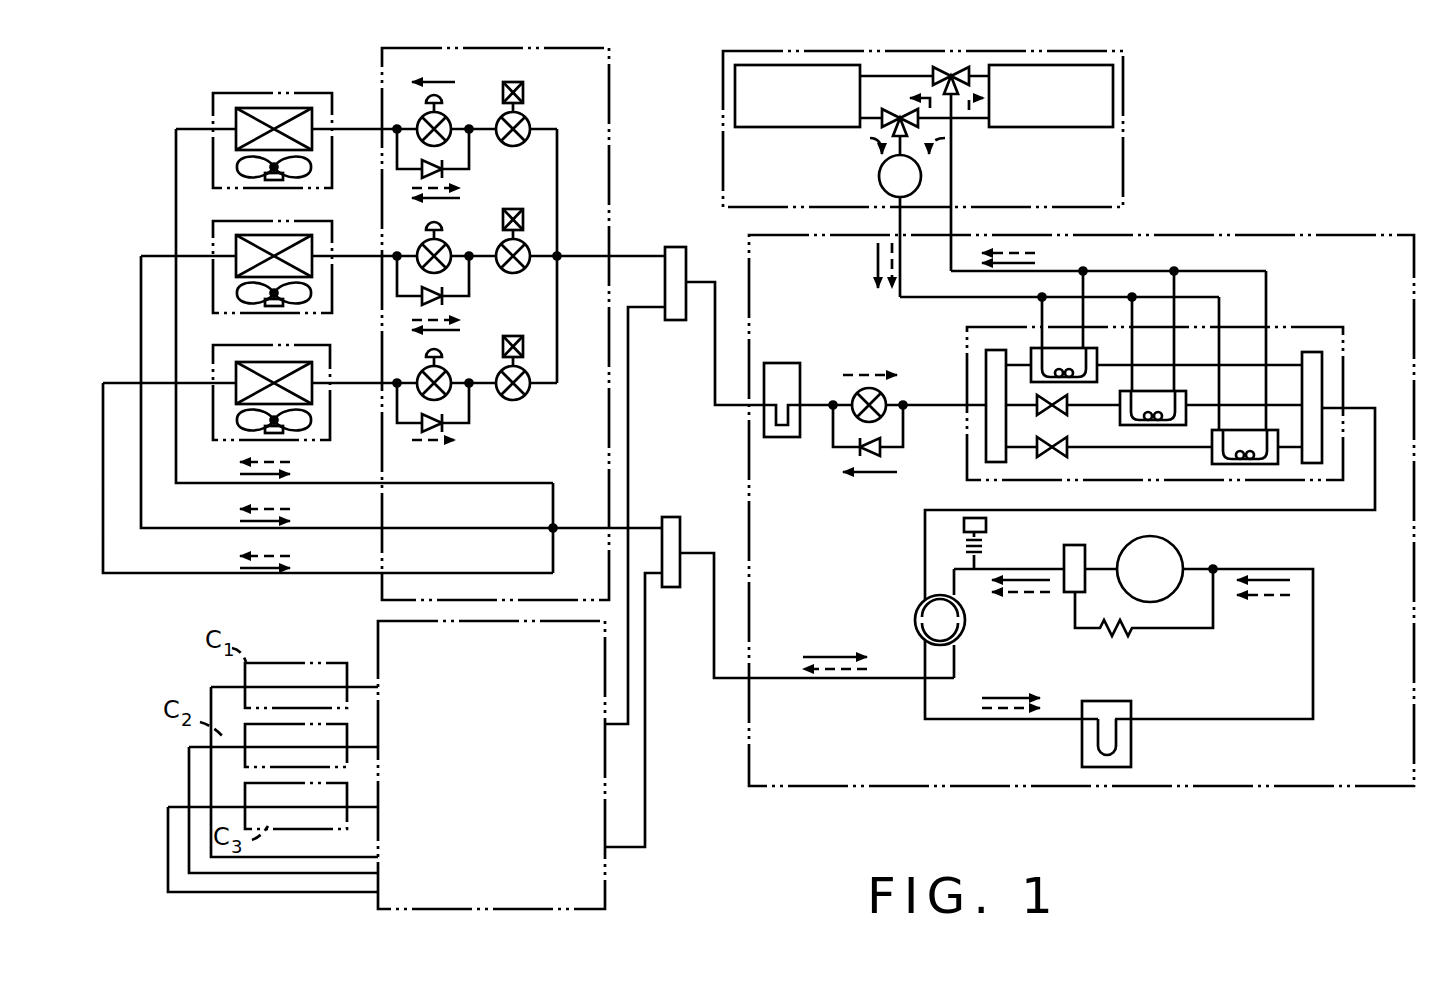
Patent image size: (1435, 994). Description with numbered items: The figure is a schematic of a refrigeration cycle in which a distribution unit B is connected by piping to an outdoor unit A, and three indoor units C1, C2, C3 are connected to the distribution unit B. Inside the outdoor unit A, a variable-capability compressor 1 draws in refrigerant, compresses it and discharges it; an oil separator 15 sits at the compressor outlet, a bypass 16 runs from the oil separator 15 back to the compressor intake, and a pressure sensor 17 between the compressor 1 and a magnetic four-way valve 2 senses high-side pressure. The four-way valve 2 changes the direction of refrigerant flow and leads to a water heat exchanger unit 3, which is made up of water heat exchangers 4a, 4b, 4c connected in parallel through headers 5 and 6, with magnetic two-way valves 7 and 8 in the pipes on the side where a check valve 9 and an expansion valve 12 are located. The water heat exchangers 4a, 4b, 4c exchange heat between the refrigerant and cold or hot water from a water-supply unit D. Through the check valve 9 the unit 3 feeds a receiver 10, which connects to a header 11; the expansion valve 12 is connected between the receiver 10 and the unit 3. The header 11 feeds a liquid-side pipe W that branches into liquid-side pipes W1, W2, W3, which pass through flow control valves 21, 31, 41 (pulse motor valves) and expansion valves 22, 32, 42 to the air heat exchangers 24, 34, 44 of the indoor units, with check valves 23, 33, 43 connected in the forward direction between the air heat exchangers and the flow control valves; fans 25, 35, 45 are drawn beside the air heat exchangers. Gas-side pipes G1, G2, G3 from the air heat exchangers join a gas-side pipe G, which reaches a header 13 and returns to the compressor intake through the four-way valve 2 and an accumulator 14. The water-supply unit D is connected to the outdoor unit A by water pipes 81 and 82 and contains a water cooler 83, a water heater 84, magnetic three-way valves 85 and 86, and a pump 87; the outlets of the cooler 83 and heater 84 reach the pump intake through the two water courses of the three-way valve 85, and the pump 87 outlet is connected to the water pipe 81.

The variable-capability compressor 1 is at (1170, 552).
The magnetic four-way valve 2 is at (916, 606).
The water heat exchanger unit 3 is at (1302, 316).
The water heat exchanger 4a is at (1030, 370).
The water heat exchanger 4b is at (1153, 425).
The water heat exchanger 4c is at (1240, 464).
The header 5 is at (1322, 370).
The header 6 is at (986, 352).
The magnetic two-way valve 7 is at (1067, 411).
The magnetic two-way valve 8 is at (1067, 453).
The check valve 9 is at (880, 452).
The receiver 10 is at (780, 364).
The header 11 is at (678, 246).
The expansion valve 12 is at (884, 400).
The header 13 is at (670, 590).
The accumulator 14 is at (1131, 750).
The oil separator 15 is at (1074, 594).
The bypass 16 is at (1170, 630).
The pressure sensor 17 is at (986, 524).
The flow control valve 21 is at (528, 122).
The expansion valve 22 is at (437, 122).
The check valve 23 is at (443, 172).
The air heat exchanger 24 is at (292, 108).
The indoor fan 25 is at (311, 170).
The flow control valve 31 is at (510, 272).
The expansion valve 32 is at (443, 250).
The check valve 33 is at (443, 299).
The air heat exchanger 34 is at (312, 243).
The indoor fan 35 is at (311, 297).
The flow control valve 41 is at (512, 399).
The expansion valve 42 is at (443, 376).
The check valve 43 is at (443, 426).
The air heat exchanger 44 is at (262, 362).
The indoor fan 45 is at (311, 422).
The water pipe 81 is at (892, 228).
The water pipe 82 is at (946, 228).
The water cooler 83 is at (735, 100).
The water heater 84 is at (1113, 102).
The magnetic three-way valve 85 is at (882, 126).
The magnetic three-way valve 86 is at (946, 66).
The pump 87 is at (886, 184).
The outdoor unit A is at (1312, 215).
The distribution unit B is at (612, 88).
The water-supply unit D is at (1125, 143).
The indoor unit C1 is at (214, 126).
The indoor unit C2 is at (324, 225).
The indoor unit C3 is at (330, 354).
The liquid-side pipe W is at (634, 254).
The liquid-side pipe W1 is at (538, 170).
The liquid-side pipe W2 is at (540, 214).
The liquid-side pipe W3 is at (556, 292).
The gas-side pipe G is at (644, 524).
The gas-side pipe G1 is at (554, 490).
The gas-side pipe G2 is at (512, 524).
The gas-side pipe G3 is at (558, 546).